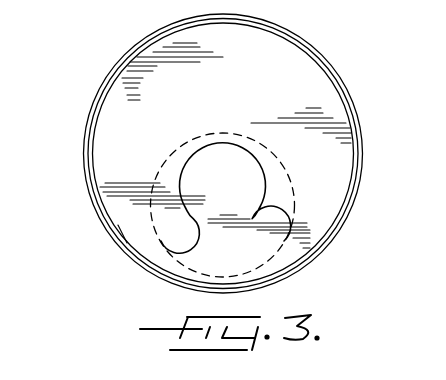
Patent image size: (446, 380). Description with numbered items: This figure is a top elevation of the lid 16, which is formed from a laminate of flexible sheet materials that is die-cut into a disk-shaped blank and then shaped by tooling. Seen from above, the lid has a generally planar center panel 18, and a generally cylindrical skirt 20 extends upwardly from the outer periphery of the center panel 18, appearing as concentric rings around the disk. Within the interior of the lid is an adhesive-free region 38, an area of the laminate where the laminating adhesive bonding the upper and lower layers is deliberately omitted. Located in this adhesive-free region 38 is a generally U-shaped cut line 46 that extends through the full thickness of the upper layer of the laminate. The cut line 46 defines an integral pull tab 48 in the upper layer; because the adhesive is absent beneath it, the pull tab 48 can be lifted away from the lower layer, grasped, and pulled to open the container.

The lid 16 is at (320, 40).
The center panel 18 is at (258, 80).
The skirt 20 is at (102, 103).
The adhesive-free region 38 is at (169, 135).
The cut line 46 is at (179, 177).
The pull tab 48 is at (252, 192).